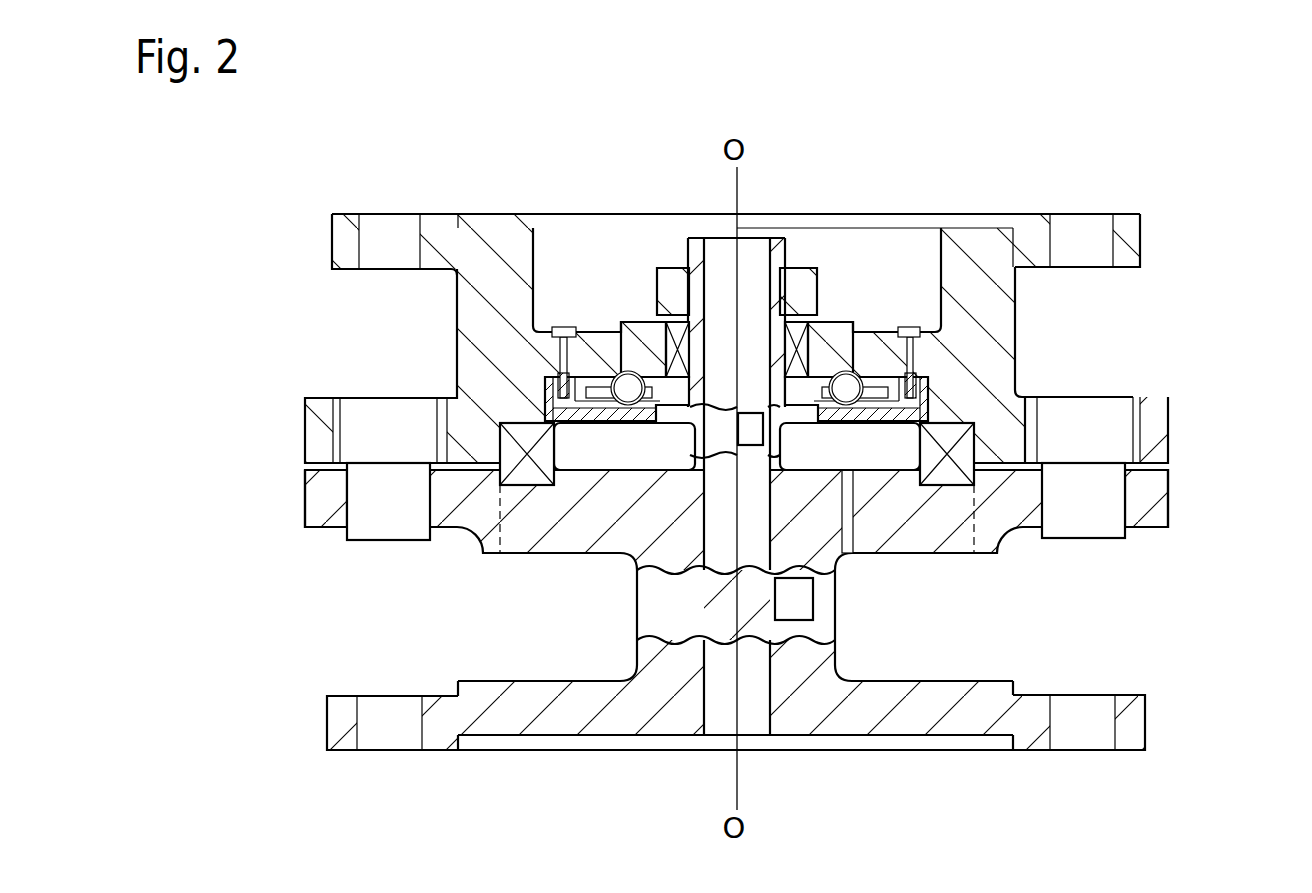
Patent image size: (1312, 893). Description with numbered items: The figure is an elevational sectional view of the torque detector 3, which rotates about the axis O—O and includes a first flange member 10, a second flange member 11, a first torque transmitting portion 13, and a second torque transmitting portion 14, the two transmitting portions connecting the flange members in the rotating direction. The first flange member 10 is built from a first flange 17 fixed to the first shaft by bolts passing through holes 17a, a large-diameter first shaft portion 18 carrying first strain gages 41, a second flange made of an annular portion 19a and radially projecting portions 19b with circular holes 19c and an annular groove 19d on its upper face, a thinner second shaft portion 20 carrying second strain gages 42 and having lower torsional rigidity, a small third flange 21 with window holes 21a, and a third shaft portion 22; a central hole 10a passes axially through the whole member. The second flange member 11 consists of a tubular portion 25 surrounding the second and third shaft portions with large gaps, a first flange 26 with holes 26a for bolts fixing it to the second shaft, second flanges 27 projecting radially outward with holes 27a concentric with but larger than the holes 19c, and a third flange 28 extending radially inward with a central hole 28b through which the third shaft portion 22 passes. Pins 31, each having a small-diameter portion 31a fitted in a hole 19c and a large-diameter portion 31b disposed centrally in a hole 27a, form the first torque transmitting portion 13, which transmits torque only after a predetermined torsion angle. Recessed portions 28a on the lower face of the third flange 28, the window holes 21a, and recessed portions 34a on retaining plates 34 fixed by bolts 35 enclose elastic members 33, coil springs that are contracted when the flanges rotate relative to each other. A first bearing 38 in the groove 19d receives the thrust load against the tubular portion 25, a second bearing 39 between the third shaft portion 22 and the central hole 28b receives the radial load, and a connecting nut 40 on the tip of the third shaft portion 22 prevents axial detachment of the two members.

The torque detector 3 is at (937, 143).
The first flange member 10 is at (722, 631).
The central hole 10a is at (718, 700).
The second flange member 11 is at (682, 279).
The first torque transmitting portion 13 is at (312, 390).
The second torque transmitting portion 14 is at (603, 357).
The first flange 17 is at (557, 723).
The holes 17a is at (363, 722).
The first shaft portion 18 is at (648, 611).
The annular portion 19a is at (900, 546).
The projecting portions 19b is at (322, 517).
The circular holes 19c is at (430, 503).
The annular groove 19d is at (528, 477).
The second shaft portion 20 is at (700, 443).
The third flange 21 is at (880, 405).
The window holes 21a is at (875, 395).
The third shaft portion 22 is at (772, 340).
The tubular portion 25 is at (470, 315).
The first flange 26 is at (445, 226).
The holes 26a is at (368, 232).
The second flanges 27 is at (1151, 377).
The holes 27a is at (1145, 400).
The third flange 28 is at (835, 337).
The recessed portions 28a is at (630, 373).
The central hole 28b is at (676, 262).
The pins 31 is at (1068, 392).
The small-diameter portion 31a is at (1082, 528).
The large-diameter portion 31b is at (1100, 412).
The elastic member 33 is at (595, 380).
The retaining plates 34 is at (742, 350).
The recessed portion 34a is at (837, 403).
The bolts 35 is at (548, 322).
The first bearing 38 is at (950, 482).
The second bearing 39 is at (770, 330).
The connecting nut 40 is at (790, 262).
The first strain gages 41 is at (806, 608).
The second strain gages 42 is at (653, 428).